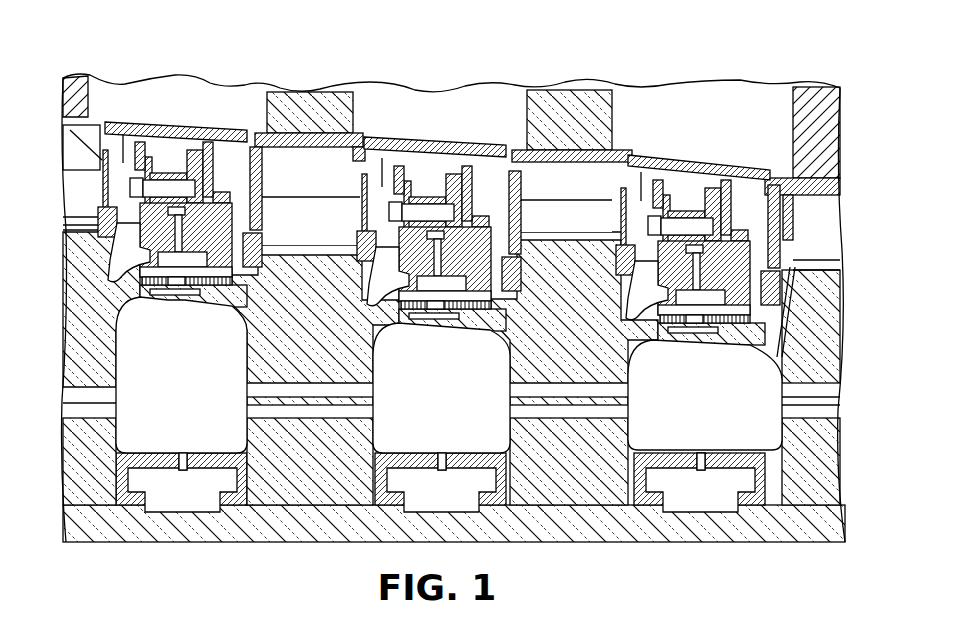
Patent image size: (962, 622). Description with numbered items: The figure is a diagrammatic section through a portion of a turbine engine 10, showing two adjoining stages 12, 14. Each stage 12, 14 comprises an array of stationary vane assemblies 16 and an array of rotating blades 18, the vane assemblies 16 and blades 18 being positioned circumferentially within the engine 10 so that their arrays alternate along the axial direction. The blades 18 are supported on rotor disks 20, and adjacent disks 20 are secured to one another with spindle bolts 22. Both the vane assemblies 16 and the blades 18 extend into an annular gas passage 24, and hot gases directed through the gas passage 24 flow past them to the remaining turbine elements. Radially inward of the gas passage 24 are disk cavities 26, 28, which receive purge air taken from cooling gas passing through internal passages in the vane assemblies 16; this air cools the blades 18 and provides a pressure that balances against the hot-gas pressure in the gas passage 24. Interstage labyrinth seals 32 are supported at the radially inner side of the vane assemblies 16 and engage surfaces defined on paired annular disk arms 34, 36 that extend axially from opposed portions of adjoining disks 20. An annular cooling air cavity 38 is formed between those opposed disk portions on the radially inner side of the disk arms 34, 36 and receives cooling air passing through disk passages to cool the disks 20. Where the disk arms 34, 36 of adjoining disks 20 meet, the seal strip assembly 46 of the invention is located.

The turbine engine 10 is at (46, 84).
The stage 12 is at (246, 98).
The stage 14 is at (511, 108).
The vane assemblies 16 is at (163, 104).
The blades 18 is at (320, 98).
The rotor disks 20 is at (303, 301).
The spindle bolts 22 is at (70, 523).
The annular gas passage 24 is at (262, 134).
The disk cavity 26 is at (105, 120).
The disk cavity 28 is at (178, 122).
The labyrinth seals 32 is at (137, 279).
The annular disk arm 34 is at (143, 306).
The annular disk arm 36 is at (221, 300).
The annular cooling air cavity 38 is at (194, 435).
The seal strip assembly 46 is at (170, 320).